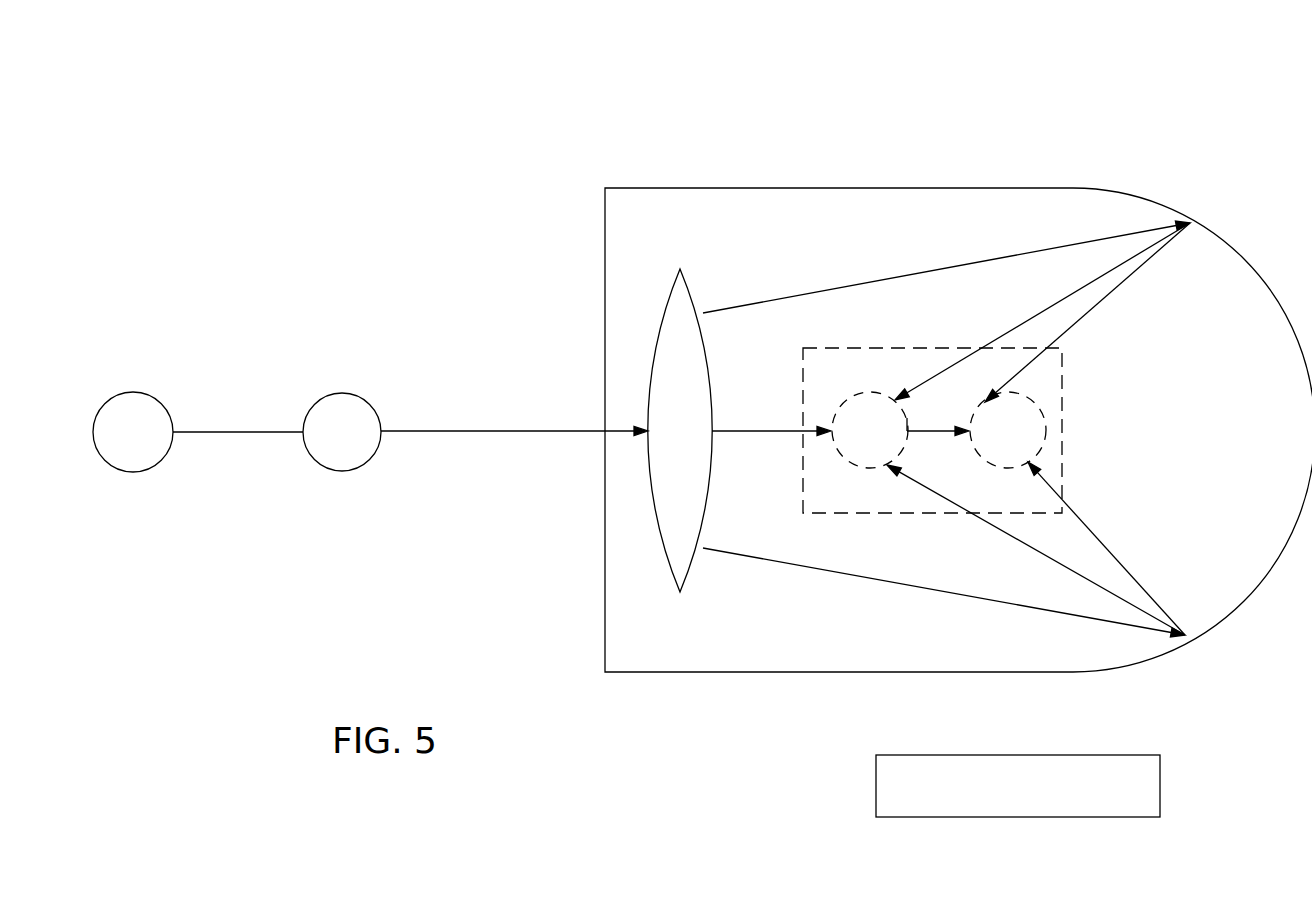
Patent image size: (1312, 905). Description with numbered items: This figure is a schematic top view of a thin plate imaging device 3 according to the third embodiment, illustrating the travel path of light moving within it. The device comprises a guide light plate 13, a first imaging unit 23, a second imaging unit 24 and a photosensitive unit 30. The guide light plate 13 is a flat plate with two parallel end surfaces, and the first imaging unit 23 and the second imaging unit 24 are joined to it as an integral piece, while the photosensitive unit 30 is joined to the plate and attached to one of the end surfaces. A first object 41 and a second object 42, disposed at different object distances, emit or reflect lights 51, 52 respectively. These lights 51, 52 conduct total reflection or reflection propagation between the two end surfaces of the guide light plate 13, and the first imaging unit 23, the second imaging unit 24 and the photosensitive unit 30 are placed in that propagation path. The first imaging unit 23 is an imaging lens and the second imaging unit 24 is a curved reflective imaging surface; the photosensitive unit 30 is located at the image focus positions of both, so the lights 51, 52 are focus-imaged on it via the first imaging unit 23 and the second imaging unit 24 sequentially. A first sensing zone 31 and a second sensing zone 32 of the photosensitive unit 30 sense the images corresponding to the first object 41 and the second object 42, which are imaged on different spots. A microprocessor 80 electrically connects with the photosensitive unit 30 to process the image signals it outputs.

The thin plate imaging device 3 is at (1005, 166).
The guide light plate 13 is at (719, 213).
The first imaging unit 23 is at (665, 545).
The second imaging unit 24 is at (1308, 445).
The photosensitive unit 30 is at (912, 548).
The first sensing zone 31 is at (883, 452).
The second sensing zone 32 is at (1012, 447).
The first object 41 is at (125, 452).
The second object 42 is at (336, 452).
The light 51 is at (222, 432).
The light 52 is at (478, 432).
The microprocessor 80 is at (1153, 770).